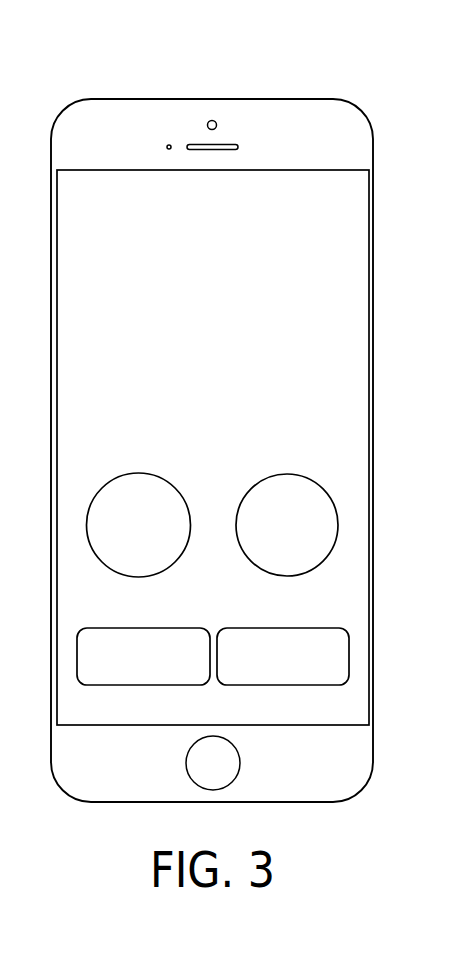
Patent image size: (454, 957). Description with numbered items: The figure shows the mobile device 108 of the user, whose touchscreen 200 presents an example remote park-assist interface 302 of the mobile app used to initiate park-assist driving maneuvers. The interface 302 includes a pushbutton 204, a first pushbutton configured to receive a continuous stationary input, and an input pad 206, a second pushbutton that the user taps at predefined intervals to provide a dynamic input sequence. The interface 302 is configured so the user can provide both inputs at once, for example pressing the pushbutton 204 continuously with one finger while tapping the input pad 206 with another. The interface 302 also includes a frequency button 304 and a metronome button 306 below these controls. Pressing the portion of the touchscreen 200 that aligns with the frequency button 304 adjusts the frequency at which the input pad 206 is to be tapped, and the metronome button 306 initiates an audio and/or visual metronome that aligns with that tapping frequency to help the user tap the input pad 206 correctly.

The mobile device 108 is at (227, 99).
The touchscreen 200 is at (322, 212).
The interface 302 is at (232, 210).
The pushbutton 204 is at (160, 532).
The input pad 206 is at (305, 532).
The frequency button 304 is at (163, 670).
The metronome button 306 is at (302, 670).